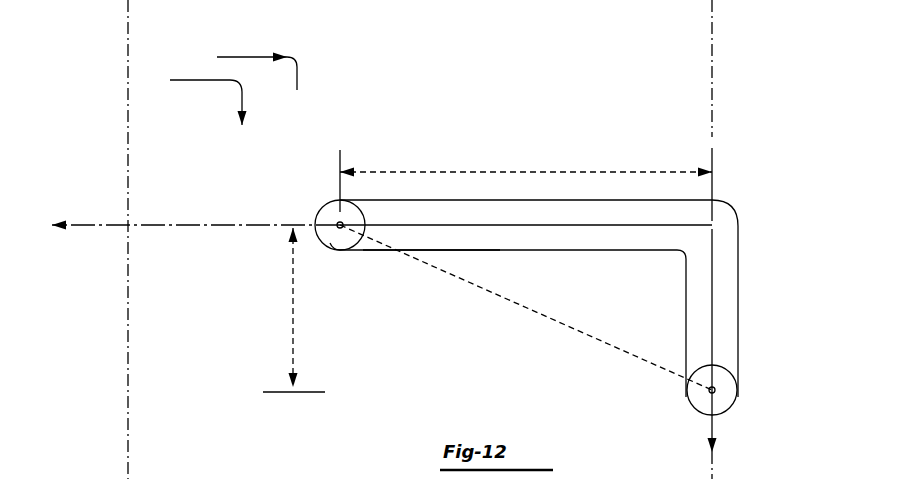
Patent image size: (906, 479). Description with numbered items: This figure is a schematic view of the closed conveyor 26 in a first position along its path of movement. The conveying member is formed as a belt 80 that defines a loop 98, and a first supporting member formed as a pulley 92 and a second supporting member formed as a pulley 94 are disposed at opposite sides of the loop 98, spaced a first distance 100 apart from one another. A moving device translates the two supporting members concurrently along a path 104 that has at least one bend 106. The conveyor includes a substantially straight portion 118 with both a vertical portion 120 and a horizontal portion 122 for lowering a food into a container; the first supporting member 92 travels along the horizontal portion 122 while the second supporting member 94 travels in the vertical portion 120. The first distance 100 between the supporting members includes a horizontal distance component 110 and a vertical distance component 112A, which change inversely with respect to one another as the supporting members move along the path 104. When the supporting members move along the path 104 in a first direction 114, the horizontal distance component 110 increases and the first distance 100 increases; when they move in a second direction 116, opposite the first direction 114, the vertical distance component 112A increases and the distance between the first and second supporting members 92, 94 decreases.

The closed conveyor 26 is at (748, 252).
The belt 80 is at (363, 252).
The pulley (first supporting member) 92 is at (330, 244).
The pulley (second supporting member) 94 is at (727, 402).
The loop 98 is at (408, 160).
The first distance 100 is at (530, 313).
The path 104 is at (732, 130).
The bend 106 is at (750, 193).
The horizontal distance component 110 is at (571, 170).
The vertical distance component 112A is at (296, 330).
The first direction 114 is at (300, 78).
The second direction 116 is at (193, 80).
The substantially straight portion 118 is at (272, 222).
The vertical portion 120 is at (712, 349).
The horizontal portion 122 is at (630, 224).